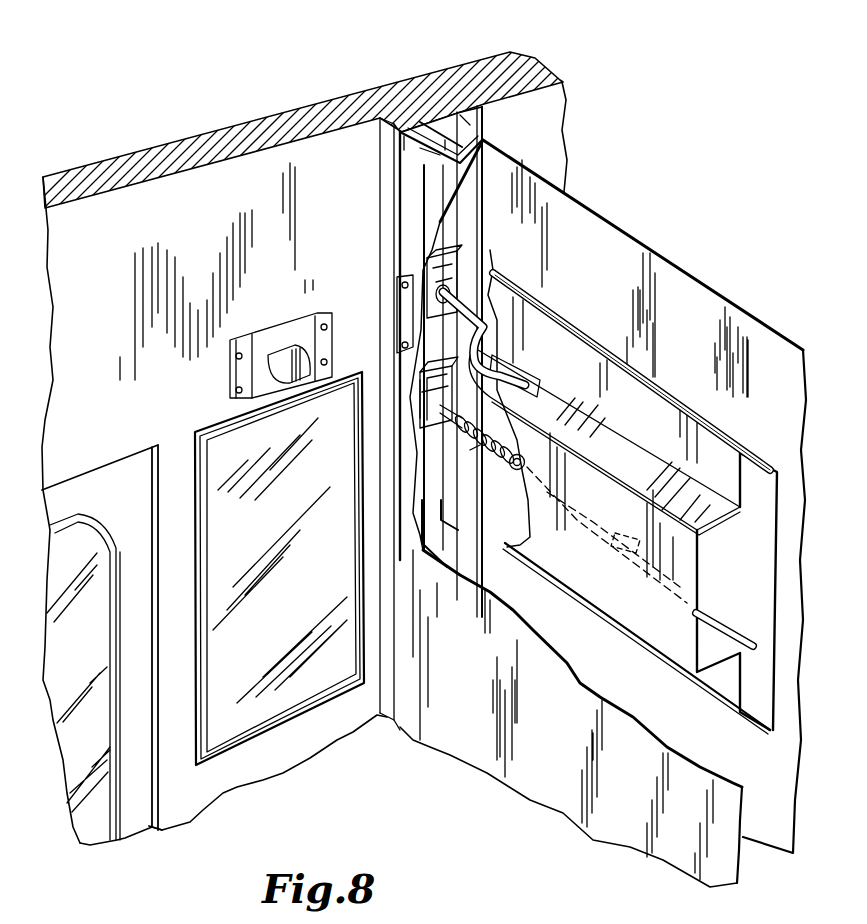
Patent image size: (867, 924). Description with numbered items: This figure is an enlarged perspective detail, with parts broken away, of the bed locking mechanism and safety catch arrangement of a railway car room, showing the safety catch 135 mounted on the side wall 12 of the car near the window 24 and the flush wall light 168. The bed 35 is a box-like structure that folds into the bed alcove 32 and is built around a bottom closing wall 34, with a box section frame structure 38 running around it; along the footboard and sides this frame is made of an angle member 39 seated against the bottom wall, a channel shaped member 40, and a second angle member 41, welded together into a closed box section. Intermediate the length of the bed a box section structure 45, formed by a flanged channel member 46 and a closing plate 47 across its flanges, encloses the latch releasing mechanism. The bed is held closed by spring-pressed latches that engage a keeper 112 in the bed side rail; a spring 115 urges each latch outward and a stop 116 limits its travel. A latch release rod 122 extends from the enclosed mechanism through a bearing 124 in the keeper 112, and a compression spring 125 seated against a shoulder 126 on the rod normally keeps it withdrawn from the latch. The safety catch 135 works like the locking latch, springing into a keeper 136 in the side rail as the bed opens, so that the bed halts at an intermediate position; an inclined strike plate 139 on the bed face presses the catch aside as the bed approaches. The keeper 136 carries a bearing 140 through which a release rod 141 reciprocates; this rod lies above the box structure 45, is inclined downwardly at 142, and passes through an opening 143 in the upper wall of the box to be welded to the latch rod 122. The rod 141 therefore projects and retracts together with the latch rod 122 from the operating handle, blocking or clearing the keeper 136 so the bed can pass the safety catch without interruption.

The side wall 12 is at (128, 196).
The window 24 is at (214, 504).
The bed alcove 32 is at (400, 157).
The bottom closing wall 34 is at (455, 172).
The bed 35 is at (528, 803).
The box section frame structure 38 is at (445, 127).
The angle member 39 is at (422, 123).
The channel shaped member 40 is at (440, 125).
The second angle member 41 is at (466, 113).
The box section structure 45 is at (692, 356).
The flanged channel member 46 is at (604, 441).
The closing plate 47 is at (753, 465).
The keeper 112 is at (420, 407).
The spring 115 is at (502, 448).
The stop 116 is at (506, 460).
The latch release rod 122 is at (727, 621).
The bearing 124 is at (420, 427).
The compression spring 125 is at (470, 450).
The shoulder 126 is at (508, 470).
The safety catch 135 is at (287, 355).
The keeper 136 is at (453, 255).
The inclined strike plate 139 is at (397, 332).
The bearing 140 is at (498, 278).
The release rod 141 is at (620, 537).
The inclined portion 142 is at (518, 367).
The opening 143 is at (520, 387).
The wall light 168 is at (279, 568).